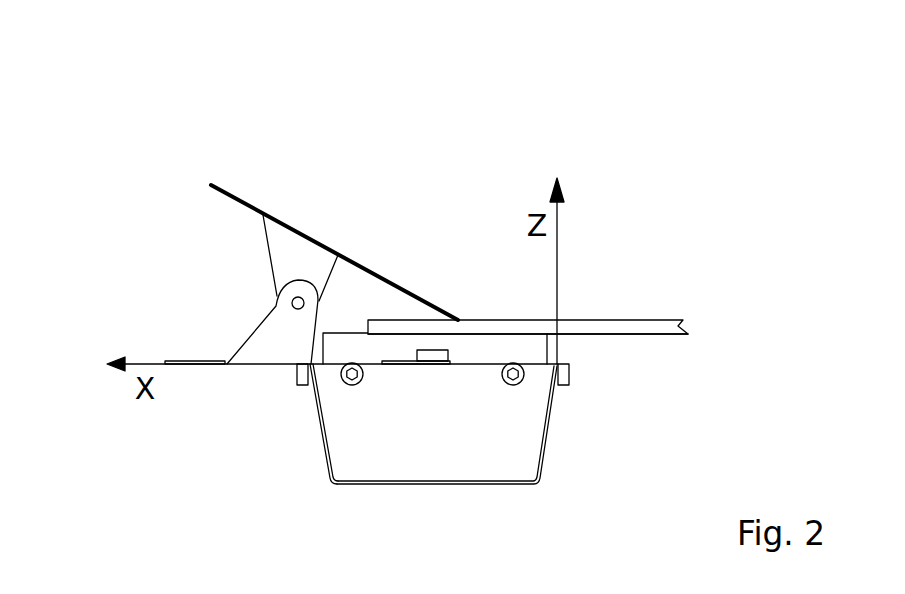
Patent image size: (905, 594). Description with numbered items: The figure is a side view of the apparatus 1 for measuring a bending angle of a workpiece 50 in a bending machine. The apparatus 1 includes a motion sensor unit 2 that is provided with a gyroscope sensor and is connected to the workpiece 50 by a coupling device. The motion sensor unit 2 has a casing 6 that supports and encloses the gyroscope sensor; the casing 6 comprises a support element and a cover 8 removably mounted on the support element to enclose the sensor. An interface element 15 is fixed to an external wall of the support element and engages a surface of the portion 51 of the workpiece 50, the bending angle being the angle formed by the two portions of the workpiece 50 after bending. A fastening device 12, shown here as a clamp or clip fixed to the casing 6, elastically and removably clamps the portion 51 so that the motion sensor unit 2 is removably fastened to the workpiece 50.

The apparatus 1 is at (145, 123).
The motion sensor unit 2 is at (296, 504).
The casing 6 is at (318, 437).
The cover 8 is at (415, 437).
The fastening device 12 is at (307, 257).
The interface element 15 is at (483, 352).
The workpiece 50 is at (589, 320).
The portion of the workpiece 51 is at (623, 334).